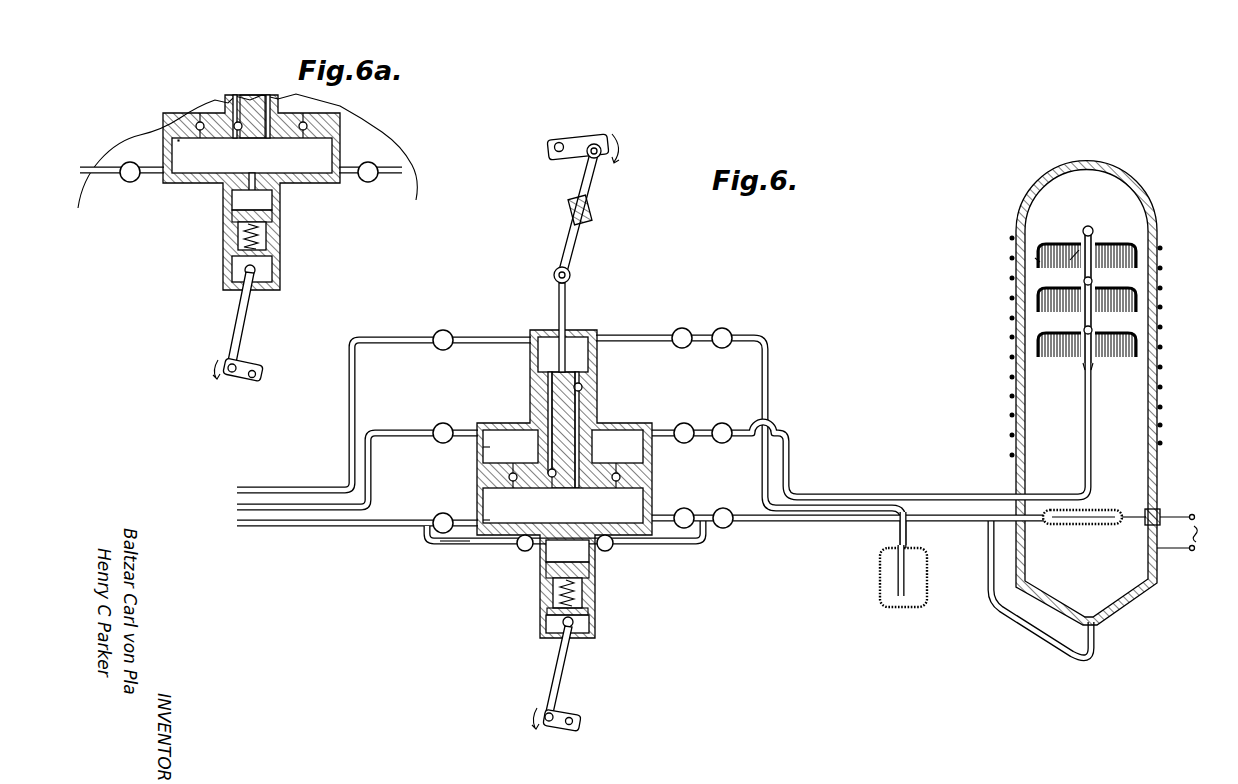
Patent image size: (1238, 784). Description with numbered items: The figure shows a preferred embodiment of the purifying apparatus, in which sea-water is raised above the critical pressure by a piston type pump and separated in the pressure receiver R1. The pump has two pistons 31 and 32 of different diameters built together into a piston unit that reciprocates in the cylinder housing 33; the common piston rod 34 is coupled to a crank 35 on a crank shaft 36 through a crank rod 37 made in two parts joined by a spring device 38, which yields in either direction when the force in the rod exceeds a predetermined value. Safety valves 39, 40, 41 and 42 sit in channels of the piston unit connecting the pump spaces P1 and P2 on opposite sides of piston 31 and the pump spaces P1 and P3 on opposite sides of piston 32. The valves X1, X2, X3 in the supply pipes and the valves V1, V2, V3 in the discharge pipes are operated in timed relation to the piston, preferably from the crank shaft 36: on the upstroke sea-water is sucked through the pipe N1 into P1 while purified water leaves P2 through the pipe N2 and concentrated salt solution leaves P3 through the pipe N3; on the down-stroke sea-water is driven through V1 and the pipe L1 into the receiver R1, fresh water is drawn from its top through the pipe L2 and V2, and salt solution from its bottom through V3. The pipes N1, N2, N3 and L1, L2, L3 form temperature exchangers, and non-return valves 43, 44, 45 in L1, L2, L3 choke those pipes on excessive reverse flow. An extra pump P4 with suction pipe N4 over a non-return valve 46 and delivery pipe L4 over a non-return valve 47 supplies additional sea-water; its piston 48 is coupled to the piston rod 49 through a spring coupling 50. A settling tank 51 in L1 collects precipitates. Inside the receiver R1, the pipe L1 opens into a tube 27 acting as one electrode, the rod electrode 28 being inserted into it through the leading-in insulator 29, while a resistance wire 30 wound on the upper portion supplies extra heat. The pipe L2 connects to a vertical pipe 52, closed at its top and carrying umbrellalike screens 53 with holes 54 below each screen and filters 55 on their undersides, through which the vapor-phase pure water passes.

In FIG. 6, the tube 27 is at (1108, 509).
In FIG. 6, the electrode 28 is at (1134, 527).
In FIG. 6, the leading-in insulator 29 is at (1164, 511).
In FIG. 6, the electric resistance wire 30 is at (1163, 308).
In FIG. 6, the piston 31 is at (528, 487).
In FIG. 6, the piston 32 is at (581, 406).
In FIG. 6, the cylinder housing 33 is at (652, 466).
In FIG. 6, the piston rod 34 is at (568, 309).
In FIG. 6, the crank 35 is at (580, 141).
In FIG. 6, the crank shaft 36 is at (552, 149).
In FIG. 6, the crank rod 37 is at (577, 252).
In FIG. 6, the spring device 38 is at (596, 210).
In FIG. 6A, the safety valve 39 is at (205, 133).
In FIG. 6, the safety valve 39 is at (515, 470).
In FIG. 6A, the safety valve 40 is at (302, 118).
In FIG. 6, the safety valve 40 is at (619, 470).
In FIG. 6A, the safety valve 41 is at (245, 133).
In FIG. 6, the safety valve 41 is at (563, 484).
In FIG. 6, the safety valve 42 is at (584, 386).
In FIG. 6, the non-return valve 43 is at (731, 506).
In FIG. 6, the non-return valve 44 is at (727, 424).
In FIG. 6, the non-return valve 45 is at (726, 329).
In FIG. 6, the non-return valve 46 is at (524, 552).
In FIG. 6, the non-return valve 47 is at (614, 548).
In FIG. 6, the piston 48 is at (590, 571).
In FIG. 6, the piston rod 49 is at (560, 673).
In FIG. 6, the spring coupling 50 is at (584, 593).
In FIG. 6, the settling tank 51 is at (928, 584).
In FIG. 6, the vertical pipe 52 is at (1093, 367).
In FIG. 6, the umbrellalike screens 53 is at (1058, 243).
In FIG. 6, the holes 54 is at (1080, 252).
In FIG. 6, the filters 55 is at (1038, 258).
In FIG. 6, the pressure receiver R1 is at (1150, 221).
In FIG. 6A, the pump space P1 is at (196, 176).
In FIG. 6, the pump space P1 is at (506, 524).
In FIG. 6, the pump space P2 is at (478, 448).
In FIG. 6, the pump space P3 is at (532, 357).
In FIG. 6A, the extra pump P4 is at (226, 207).
In FIG. 6, the extra pump P4 is at (545, 578).
In FIG. 6A, the valve X1 is at (142, 150).
In FIG. 6, the valve X1 is at (446, 514).
In FIG. 6, the valve X2 is at (446, 423).
In FIG. 6, the valve X3 is at (445, 329).
In FIG. 6A, the valve V1 is at (376, 165).
In FIG. 6, the valve V1 is at (689, 504).
In FIG. 6, the valve V2 is at (687, 424).
In FIG. 6, the valve V3 is at (684, 329).
In FIG. 6, the supply pipe N1 is at (323, 528).
In FIG. 6, the discharge pipe N2 is at (285, 512).
In FIG. 6, the discharge pipe N3 is at (272, 495).
In FIG. 6, the suction pipe N4 is at (444, 547).
In FIG. 6, the supply pipe L1 is at (734, 526).
In FIG. 6, the discharge pipe L2 is at (668, 430).
In FIG. 6, the discharge pipe L3 is at (1020, 636).
In FIG. 6, the delivery pipe L4 is at (700, 546).